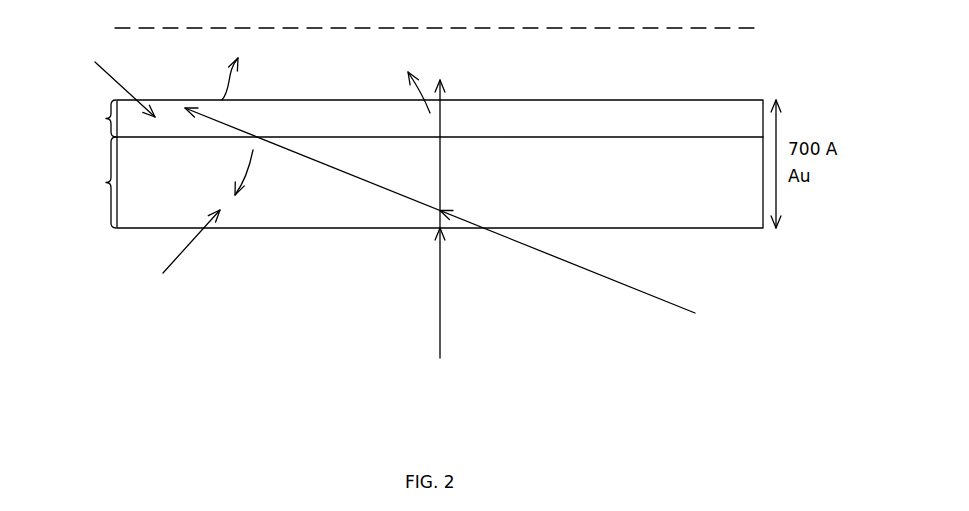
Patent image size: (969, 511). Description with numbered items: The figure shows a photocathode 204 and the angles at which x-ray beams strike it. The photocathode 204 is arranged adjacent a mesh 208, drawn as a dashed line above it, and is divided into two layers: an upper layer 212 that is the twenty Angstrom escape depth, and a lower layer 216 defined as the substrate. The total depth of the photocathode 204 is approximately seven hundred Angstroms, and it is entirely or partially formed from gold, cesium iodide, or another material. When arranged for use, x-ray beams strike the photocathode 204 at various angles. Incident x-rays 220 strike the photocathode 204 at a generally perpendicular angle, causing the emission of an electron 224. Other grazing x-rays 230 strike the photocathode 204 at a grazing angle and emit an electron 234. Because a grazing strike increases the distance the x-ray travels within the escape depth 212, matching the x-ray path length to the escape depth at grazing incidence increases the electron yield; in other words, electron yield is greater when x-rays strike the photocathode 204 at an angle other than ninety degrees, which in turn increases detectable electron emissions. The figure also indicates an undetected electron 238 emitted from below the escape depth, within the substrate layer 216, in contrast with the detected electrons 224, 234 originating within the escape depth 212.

The photocathode 204 is at (785, 70).
The mesh 208 is at (710, 30).
The escape depth layer 212 is at (417, 118).
The substrate layer 216 is at (94, 182).
The incident x-rays 220 is at (440, 295).
The electron 224 is at (410, 75).
The grazing x-rays 230 is at (347, 173).
The electron 234 is at (230, 75).
The photoelectron not detected (emitted below escape depth) 238 is at (248, 168).